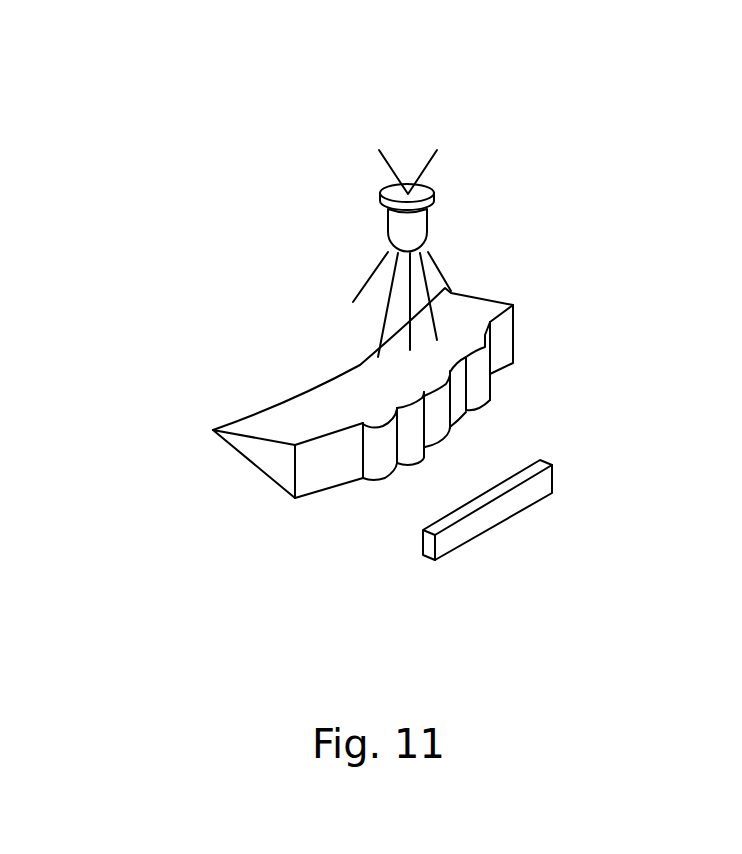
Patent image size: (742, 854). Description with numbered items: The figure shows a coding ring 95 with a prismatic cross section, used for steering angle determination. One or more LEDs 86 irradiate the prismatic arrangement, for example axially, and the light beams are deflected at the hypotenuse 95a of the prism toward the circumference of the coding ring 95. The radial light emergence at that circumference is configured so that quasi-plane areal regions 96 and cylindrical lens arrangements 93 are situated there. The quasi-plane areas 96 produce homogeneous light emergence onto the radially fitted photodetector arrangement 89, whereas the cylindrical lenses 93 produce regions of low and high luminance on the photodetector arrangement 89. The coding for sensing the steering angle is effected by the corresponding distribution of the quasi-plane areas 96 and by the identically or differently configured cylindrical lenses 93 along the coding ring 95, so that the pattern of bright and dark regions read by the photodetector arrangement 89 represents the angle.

The LED 86 is at (435, 177).
The cylindrical lens arrangement 93 is at (386, 486).
The photodetector arrangement 89 is at (520, 502).
The coding ring 95 is at (290, 462).
The hypotenuse of the prism 95a is at (263, 473).
The quasi-plane areal region 96 is at (320, 477).